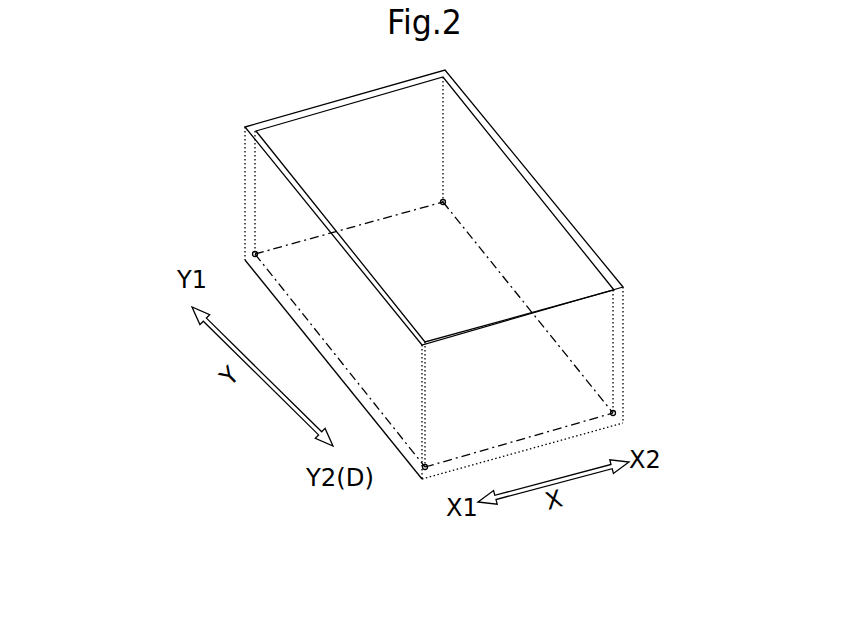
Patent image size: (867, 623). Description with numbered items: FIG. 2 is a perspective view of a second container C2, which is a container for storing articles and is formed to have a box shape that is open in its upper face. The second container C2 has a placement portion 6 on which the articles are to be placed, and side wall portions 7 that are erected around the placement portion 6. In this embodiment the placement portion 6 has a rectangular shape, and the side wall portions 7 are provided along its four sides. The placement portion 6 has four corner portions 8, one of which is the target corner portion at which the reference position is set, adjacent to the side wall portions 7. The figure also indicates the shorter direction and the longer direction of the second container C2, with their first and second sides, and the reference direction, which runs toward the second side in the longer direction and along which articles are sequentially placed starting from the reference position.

The second container C2 is at (566, 150).
The side wall portions 7 is at (302, 141).
The placement portion 6 is at (437, 278).
The corner portions 8 is at (441, 201).